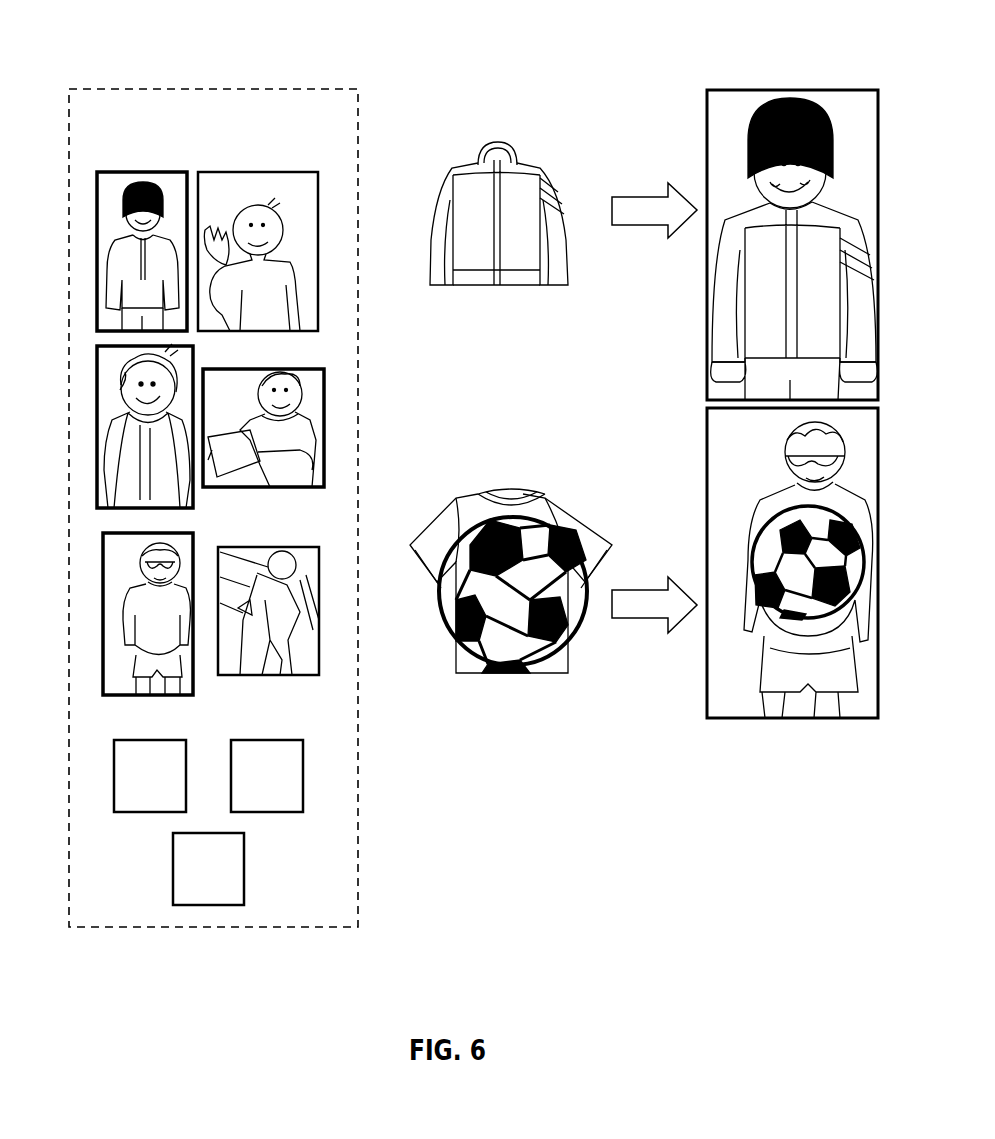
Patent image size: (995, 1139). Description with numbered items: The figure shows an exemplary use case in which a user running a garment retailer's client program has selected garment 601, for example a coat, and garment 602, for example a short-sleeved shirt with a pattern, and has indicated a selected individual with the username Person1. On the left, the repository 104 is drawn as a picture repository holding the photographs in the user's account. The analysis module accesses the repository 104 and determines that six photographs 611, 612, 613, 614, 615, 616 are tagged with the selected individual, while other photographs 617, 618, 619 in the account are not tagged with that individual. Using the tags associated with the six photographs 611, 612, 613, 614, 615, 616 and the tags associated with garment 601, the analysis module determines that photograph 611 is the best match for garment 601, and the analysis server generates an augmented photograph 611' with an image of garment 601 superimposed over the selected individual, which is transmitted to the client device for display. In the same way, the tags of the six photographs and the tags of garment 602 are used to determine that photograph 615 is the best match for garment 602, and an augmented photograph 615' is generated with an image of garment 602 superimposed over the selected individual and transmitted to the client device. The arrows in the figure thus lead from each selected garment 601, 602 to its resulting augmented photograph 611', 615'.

The repository 104 is at (300, 88).
The photograph 611 is at (107, 251).
The photograph 612 is at (318, 250).
The photograph 613 is at (97, 414).
The photograph 614 is at (324, 420).
The photograph 615 is at (110, 612).
The photograph 616 is at (319, 598).
The photograph 617 is at (168, 786).
The photograph 618 is at (285, 786).
The photograph 619 is at (226, 879).
The garment 601 is at (501, 123).
The garment 602 is at (511, 473).
The augmented photograph 611' is at (763, 245).
The augmented photograph 615' is at (762, 563).